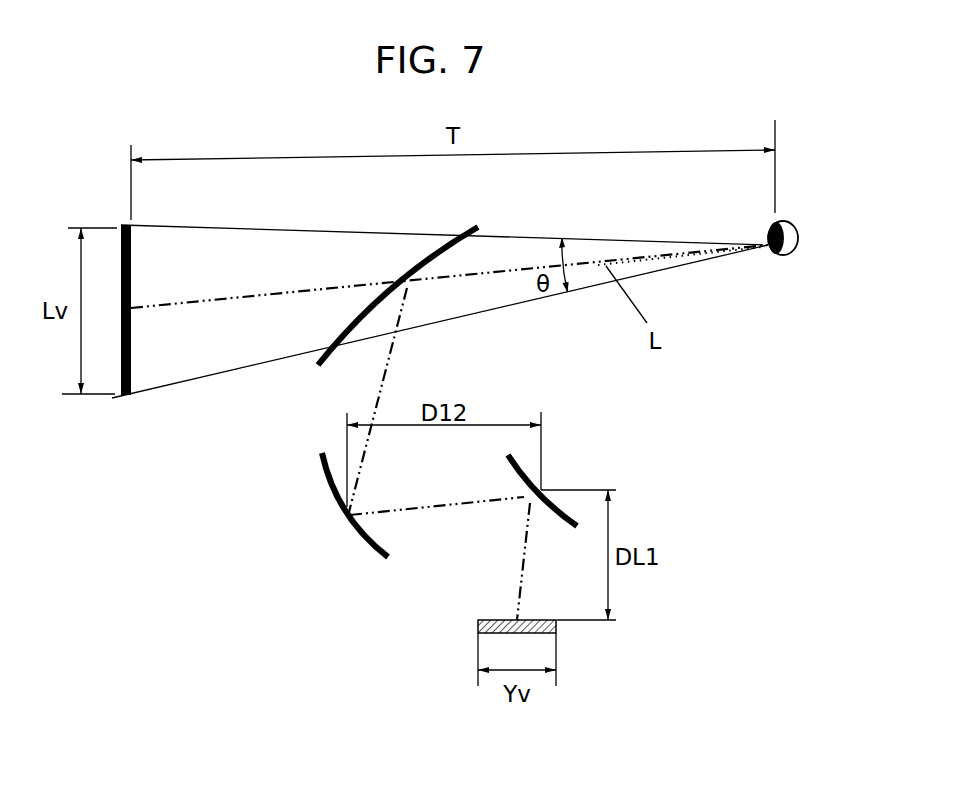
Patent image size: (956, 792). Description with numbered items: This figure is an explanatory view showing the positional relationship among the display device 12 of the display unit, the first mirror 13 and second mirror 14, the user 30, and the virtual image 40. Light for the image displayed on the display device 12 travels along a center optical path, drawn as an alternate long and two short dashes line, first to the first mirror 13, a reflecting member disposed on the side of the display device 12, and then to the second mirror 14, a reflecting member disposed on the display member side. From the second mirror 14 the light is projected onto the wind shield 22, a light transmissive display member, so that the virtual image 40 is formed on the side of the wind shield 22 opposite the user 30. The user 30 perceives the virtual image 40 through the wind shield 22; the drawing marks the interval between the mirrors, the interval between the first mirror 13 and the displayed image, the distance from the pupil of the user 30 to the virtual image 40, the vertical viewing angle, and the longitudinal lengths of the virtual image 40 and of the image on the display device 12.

The virtual image 40 is at (112, 222).
The wind shield 22 is at (428, 262).
The user 30 is at (779, 223).
The second mirror 14 is at (322, 468).
The first mirror 13 is at (562, 510).
The display device 12 is at (478, 628).